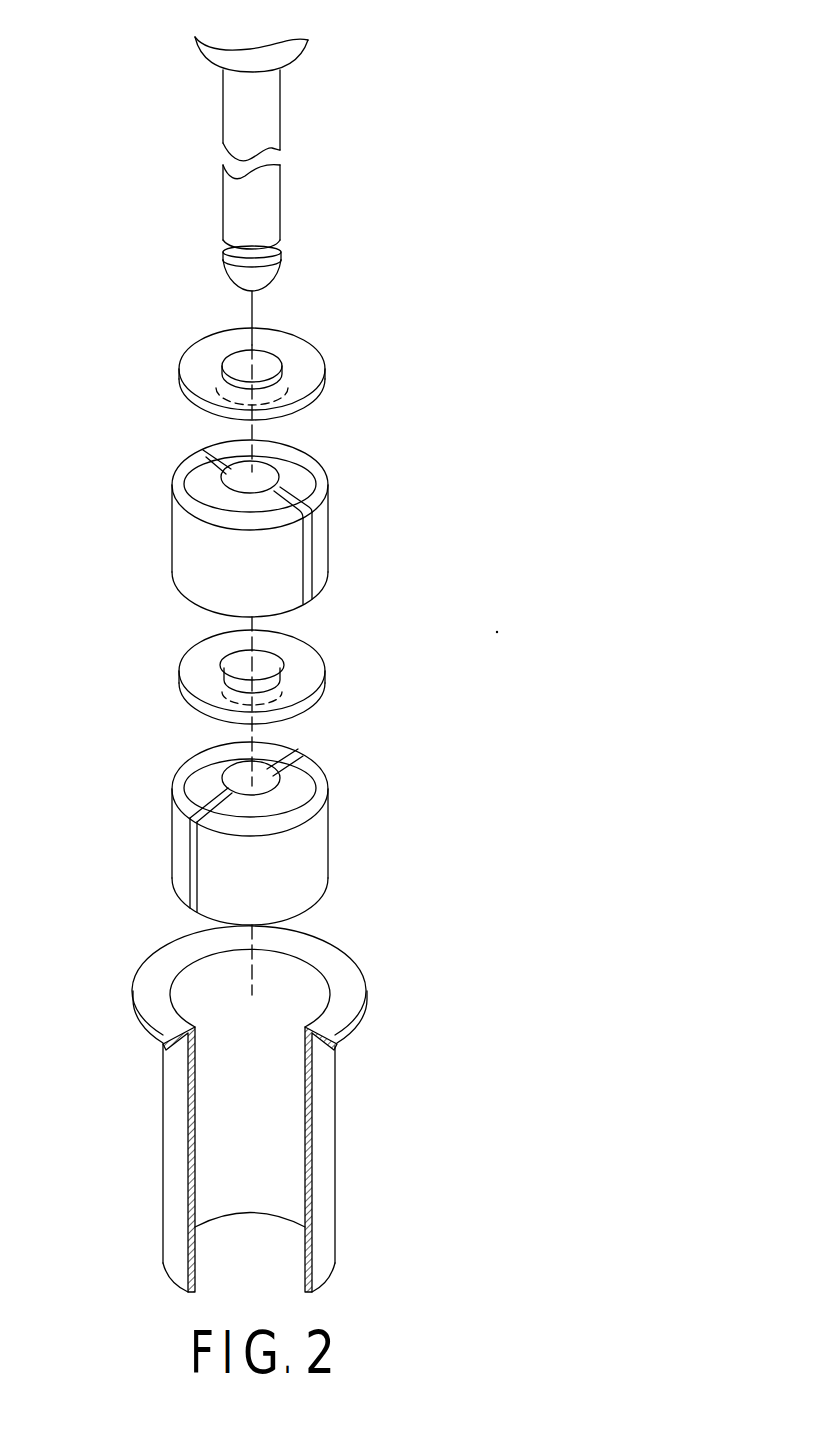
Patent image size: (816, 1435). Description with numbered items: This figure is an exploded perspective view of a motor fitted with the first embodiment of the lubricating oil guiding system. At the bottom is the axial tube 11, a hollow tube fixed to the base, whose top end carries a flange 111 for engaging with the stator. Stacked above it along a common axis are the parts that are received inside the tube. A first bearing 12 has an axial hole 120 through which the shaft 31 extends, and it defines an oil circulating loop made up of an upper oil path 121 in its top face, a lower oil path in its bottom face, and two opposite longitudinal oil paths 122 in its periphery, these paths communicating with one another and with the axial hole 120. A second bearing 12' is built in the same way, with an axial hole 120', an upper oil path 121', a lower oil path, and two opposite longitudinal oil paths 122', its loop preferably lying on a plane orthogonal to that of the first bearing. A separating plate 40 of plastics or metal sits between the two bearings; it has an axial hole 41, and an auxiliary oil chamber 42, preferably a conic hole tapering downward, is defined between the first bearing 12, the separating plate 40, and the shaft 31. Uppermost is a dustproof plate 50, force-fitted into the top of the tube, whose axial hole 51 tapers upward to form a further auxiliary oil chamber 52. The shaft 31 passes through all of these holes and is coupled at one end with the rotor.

The axial tube 11 is at (326, 1112).
The flange 111 is at (346, 981).
The first bearing 12 is at (205, 511).
The axial hole 120 is at (316, 458).
The upper oil path 121 is at (313, 484).
The longitudinal oil path 122 is at (378, 550).
The second bearing 12' is at (206, 808).
The axial hole 120' is at (342, 785).
The upper oil path 121' is at (345, 748).
The longitudinal oil path 122' is at (145, 866).
The shaft 31 is at (227, 210).
The separating plate 40 is at (156, 651).
The axial hole 41 is at (281, 693).
The auxiliary oil chamber 42 is at (278, 662).
The dustproof plate 50 is at (141, 320).
The axial hole 51 is at (279, 357).
The auxiliary oil chamber 52 is at (285, 389).